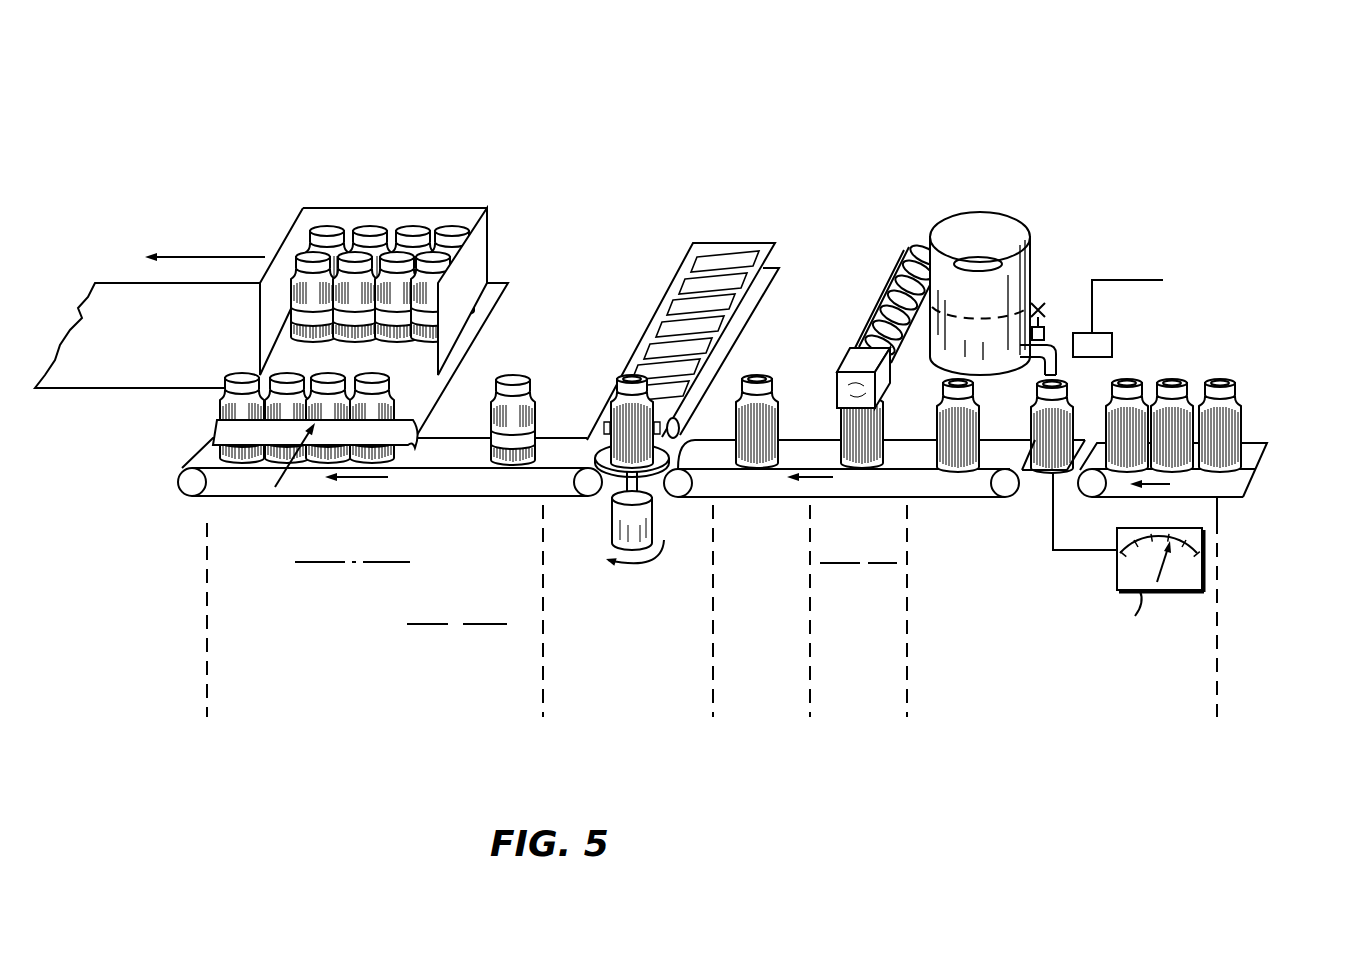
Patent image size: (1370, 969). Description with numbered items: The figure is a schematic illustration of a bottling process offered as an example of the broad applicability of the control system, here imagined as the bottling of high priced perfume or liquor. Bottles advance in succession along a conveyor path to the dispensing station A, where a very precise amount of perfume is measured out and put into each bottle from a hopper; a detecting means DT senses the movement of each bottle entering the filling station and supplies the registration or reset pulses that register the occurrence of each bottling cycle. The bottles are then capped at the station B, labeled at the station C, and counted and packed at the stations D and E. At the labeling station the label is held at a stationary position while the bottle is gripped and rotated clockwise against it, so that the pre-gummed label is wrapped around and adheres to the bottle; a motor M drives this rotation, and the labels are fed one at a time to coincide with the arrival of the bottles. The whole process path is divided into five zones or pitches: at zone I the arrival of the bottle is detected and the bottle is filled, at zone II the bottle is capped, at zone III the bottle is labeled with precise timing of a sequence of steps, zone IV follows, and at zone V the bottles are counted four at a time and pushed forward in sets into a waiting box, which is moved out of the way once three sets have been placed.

The labeling turntable motor M is at (612, 528).
The detecting means DT is at (1112, 342).
The zone I is at (1046, 664).
The zone II is at (859, 682).
The zone III is at (766, 682).
The zone IV is at (635, 664).
The zone V is at (371, 664).
The dispensing station A is at (1140, 180).
The capping station B is at (867, 180).
The labeling station C is at (617, 183).
The counting and packing station D is at (318, 185).
The counting and packing station E is at (548, 38).